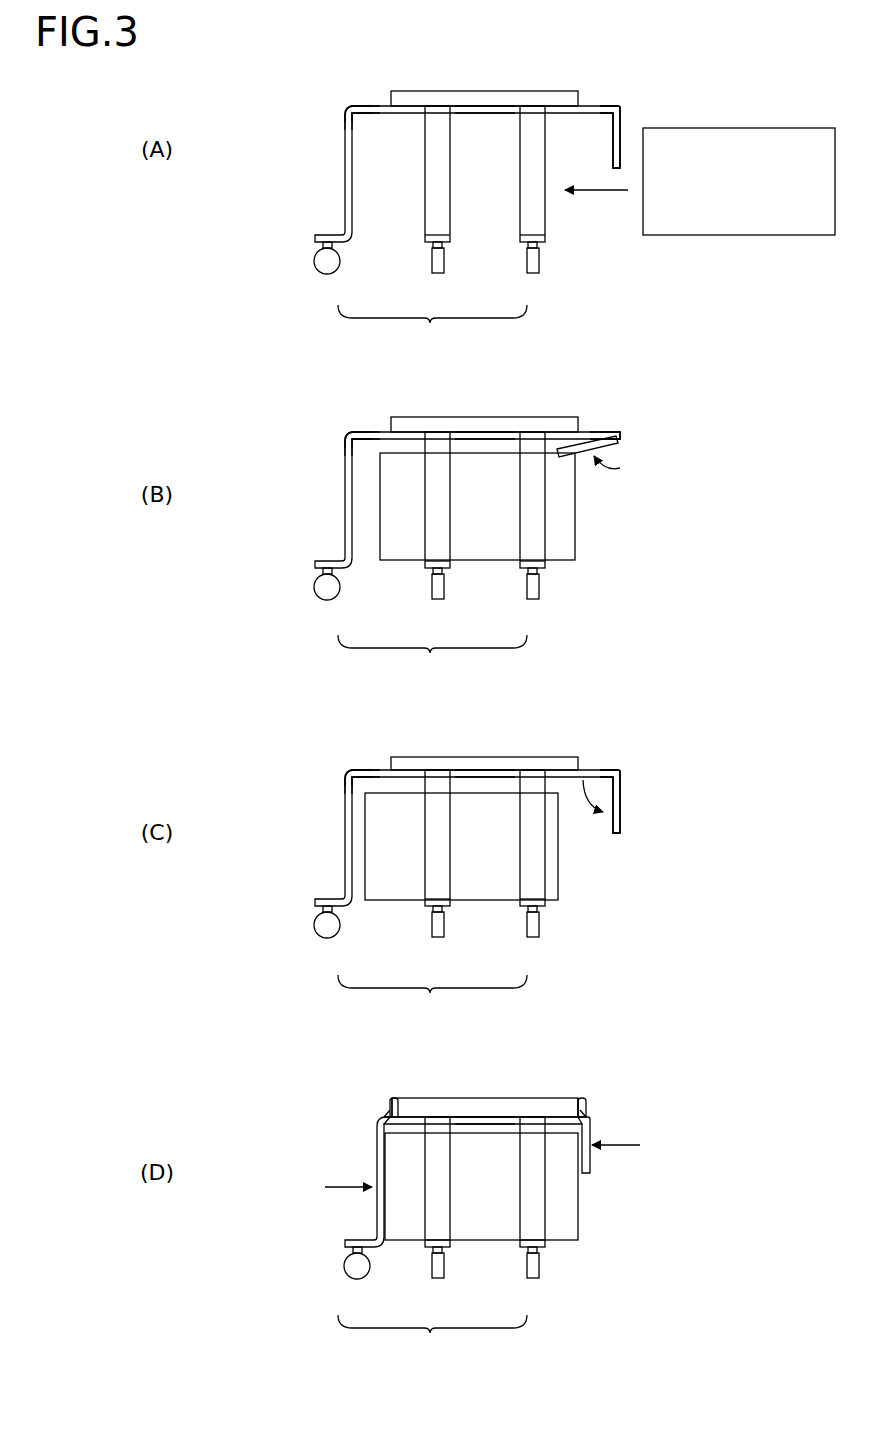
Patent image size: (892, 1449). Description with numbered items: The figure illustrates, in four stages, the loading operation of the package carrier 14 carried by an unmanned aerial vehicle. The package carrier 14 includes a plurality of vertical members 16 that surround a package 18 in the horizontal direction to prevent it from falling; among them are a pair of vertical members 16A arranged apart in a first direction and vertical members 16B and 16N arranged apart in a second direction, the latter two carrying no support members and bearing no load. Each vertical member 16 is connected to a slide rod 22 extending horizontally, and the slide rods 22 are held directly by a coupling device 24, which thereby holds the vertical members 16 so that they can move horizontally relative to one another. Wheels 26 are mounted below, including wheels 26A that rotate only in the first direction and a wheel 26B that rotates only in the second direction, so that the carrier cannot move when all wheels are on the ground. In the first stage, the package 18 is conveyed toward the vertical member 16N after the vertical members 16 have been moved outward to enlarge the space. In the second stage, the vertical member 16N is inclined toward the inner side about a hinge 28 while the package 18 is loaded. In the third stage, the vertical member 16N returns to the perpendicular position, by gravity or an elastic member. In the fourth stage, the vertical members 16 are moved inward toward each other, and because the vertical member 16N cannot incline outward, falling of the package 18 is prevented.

The package carrier 14 is at (333, 104).
The vertical members 16 is at (623, 58).
The vertical members 16A is at (440, 106).
The vertical member 16B is at (362, 112).
The vertical member 16N is at (612, 118).
The package 18 is at (724, 198).
The slide rod 22 is at (378, 115).
The coupling device 24 is at (490, 108).
The wheels 26 is at (432, 830).
The wheels 26A is at (438, 265).
The wheel 26B is at (328, 265).
The hinge 28 is at (622, 446).